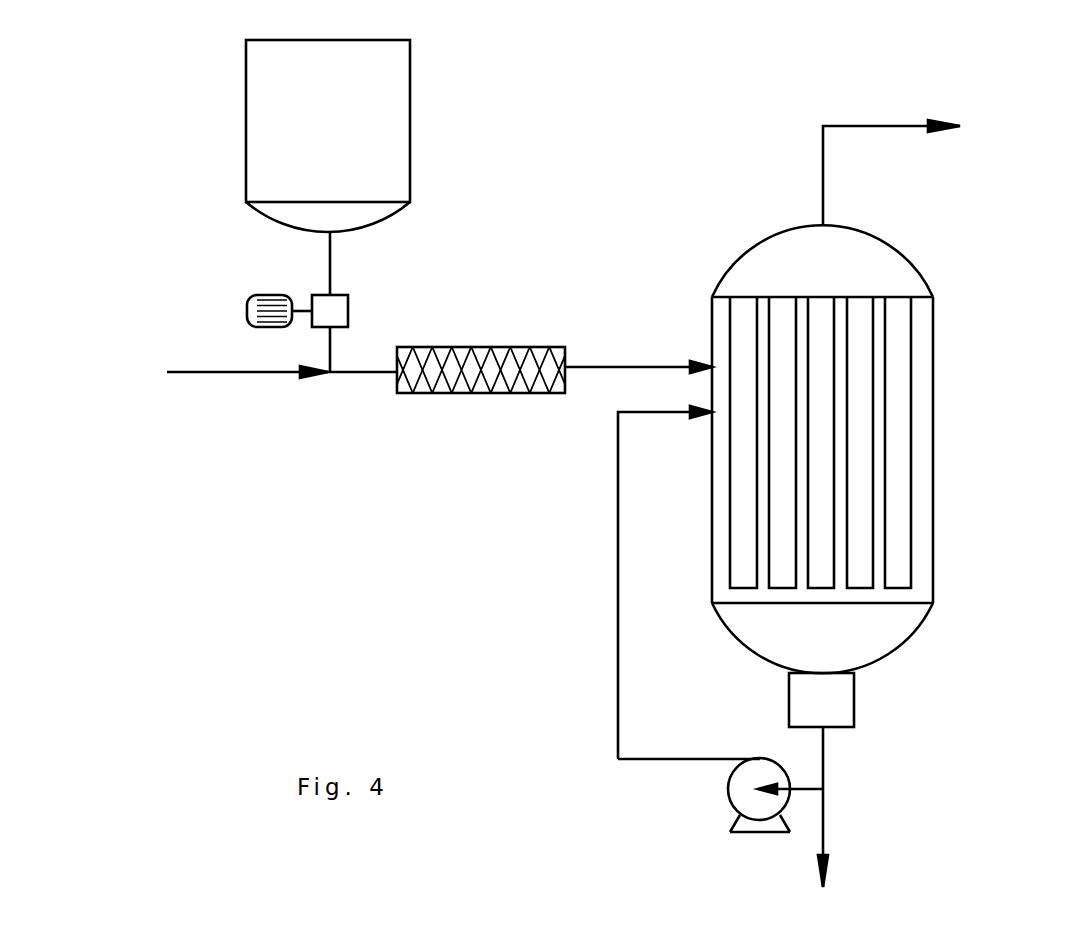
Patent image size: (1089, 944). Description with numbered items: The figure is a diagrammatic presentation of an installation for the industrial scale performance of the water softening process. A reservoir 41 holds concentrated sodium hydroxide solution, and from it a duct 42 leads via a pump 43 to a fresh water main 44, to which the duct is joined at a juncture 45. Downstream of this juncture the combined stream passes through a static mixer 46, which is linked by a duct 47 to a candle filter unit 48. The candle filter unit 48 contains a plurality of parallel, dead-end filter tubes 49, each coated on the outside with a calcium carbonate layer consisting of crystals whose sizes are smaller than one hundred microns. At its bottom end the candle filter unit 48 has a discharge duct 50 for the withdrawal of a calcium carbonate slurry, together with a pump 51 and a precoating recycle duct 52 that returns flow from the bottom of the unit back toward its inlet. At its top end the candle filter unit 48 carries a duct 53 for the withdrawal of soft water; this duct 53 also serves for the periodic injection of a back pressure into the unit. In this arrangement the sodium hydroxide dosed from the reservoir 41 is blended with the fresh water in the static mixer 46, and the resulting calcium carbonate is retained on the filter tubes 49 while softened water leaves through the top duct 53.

The reservoir 41 is at (272, 155).
The duct 42 is at (330, 272).
The pump 43 is at (305, 310).
The fresh water main 44 is at (217, 370).
The juncture 45 is at (328, 375).
The static mixer 46 is at (480, 393).
The duct 47 is at (628, 367).
The candle filter unit 48 is at (948, 312).
The filter tubes 49 is at (743, 512).
The discharge duct 50 is at (823, 760).
The pump 51 is at (735, 783).
The precoating recycle duct 52 is at (618, 587).
The duct 53 is at (875, 126).